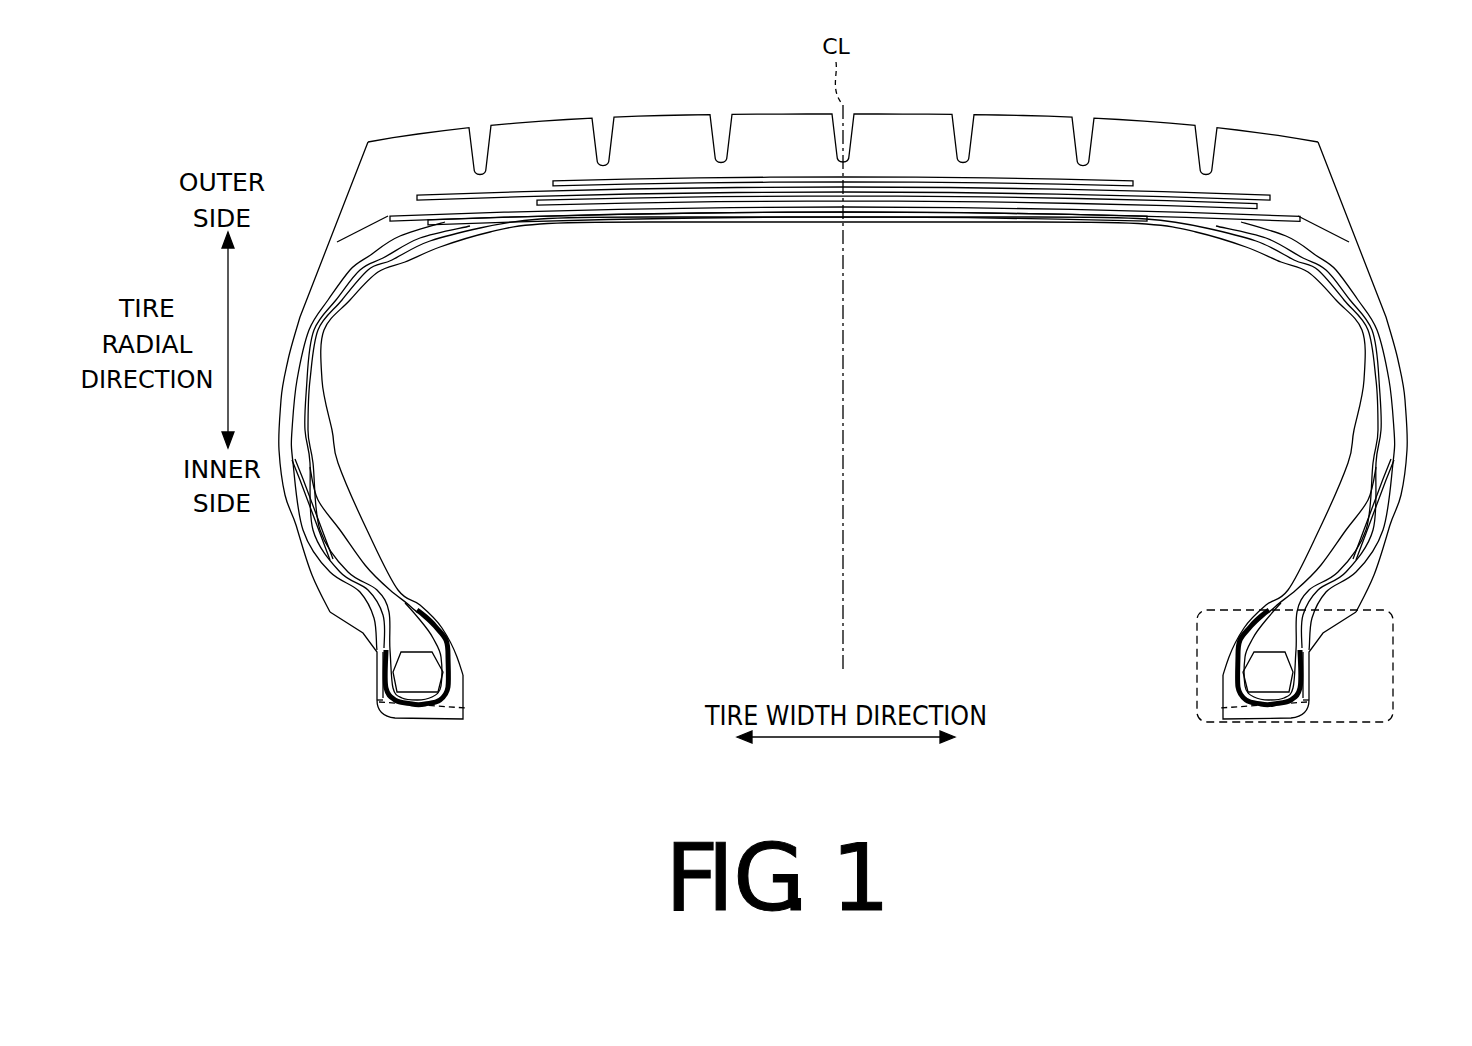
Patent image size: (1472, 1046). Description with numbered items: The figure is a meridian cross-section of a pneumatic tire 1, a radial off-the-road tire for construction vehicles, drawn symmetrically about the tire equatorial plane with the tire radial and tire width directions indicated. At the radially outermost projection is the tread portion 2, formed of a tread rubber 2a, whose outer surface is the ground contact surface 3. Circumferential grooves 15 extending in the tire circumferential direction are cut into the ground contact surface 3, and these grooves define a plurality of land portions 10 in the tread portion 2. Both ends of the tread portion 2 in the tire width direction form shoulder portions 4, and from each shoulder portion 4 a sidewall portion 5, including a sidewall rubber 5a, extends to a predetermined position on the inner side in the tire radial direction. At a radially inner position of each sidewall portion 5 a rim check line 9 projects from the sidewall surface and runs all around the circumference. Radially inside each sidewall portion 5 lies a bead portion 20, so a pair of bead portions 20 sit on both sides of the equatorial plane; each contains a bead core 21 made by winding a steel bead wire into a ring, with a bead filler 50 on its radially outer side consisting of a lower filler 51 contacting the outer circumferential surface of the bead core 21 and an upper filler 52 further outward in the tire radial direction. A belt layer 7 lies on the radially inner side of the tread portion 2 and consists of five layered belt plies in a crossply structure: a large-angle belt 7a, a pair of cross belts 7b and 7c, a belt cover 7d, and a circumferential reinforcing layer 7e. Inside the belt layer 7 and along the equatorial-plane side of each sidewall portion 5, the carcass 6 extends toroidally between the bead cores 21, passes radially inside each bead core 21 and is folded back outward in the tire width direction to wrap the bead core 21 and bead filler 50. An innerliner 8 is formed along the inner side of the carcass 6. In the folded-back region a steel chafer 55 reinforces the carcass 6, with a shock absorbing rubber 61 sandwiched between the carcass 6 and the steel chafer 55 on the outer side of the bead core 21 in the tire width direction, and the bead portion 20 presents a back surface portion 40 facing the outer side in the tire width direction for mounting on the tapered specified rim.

The pneumatic tire 1 is at (1226, 76).
The tread portion 2 is at (665, 132).
The tread rubber 2a is at (537, 135).
The ground contact surface 3 is at (783, 112).
The shoulder portion 4 is at (368, 142).
The sidewall portion 5 is at (298, 318).
The sidewall rubber 5a is at (298, 355).
The carcass 6 is at (337, 520).
The belt layer 7 is at (845, 254).
The large-angle belt 7a is at (895, 276).
The cross belt 7b is at (1090, 205).
The cross belt 7c is at (1032, 196).
The belt cover 7d is at (975, 189).
The circumferential reinforcing layer 7e is at (918, 197).
The innerliner 8 is at (1363, 327).
The rim check line 9 is at (330, 612).
The land portion 10 is at (905, 112).
The circumferential groove 15 is at (963, 112).
The bead portion 20 is at (520, 643).
The bead core 21 is at (427, 673).
The back surface portion 40 is at (377, 678).
The bead filler 50 is at (843, 461).
The lower filler 51 is at (393, 600).
The upper filler 52 is at (360, 572).
The steel chafer 55 is at (377, 655).
The shock absorbing rubber 61 is at (337, 578).